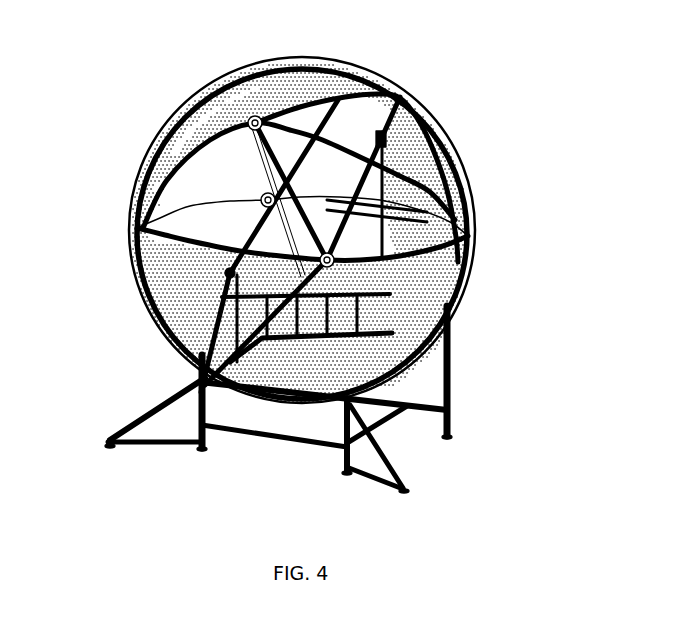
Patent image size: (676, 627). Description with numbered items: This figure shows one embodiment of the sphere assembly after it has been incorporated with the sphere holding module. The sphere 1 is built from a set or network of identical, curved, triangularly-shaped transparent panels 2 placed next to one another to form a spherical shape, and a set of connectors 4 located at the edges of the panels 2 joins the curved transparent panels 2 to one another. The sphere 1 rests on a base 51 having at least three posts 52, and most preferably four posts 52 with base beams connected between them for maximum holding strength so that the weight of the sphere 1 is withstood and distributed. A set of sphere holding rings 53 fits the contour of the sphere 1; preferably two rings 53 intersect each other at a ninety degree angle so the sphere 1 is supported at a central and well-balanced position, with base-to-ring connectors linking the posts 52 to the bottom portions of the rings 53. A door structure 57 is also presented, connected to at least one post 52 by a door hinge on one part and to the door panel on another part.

The sphere 1 is at (205, 55).
The transparent panels 2 is at (188, 158).
The connectors 4 is at (259, 118).
The sphere holding rings 53 is at (353, 118).
The door structure 57 is at (383, 215).
The base 51 is at (370, 410).
The posts 52 is at (167, 398).